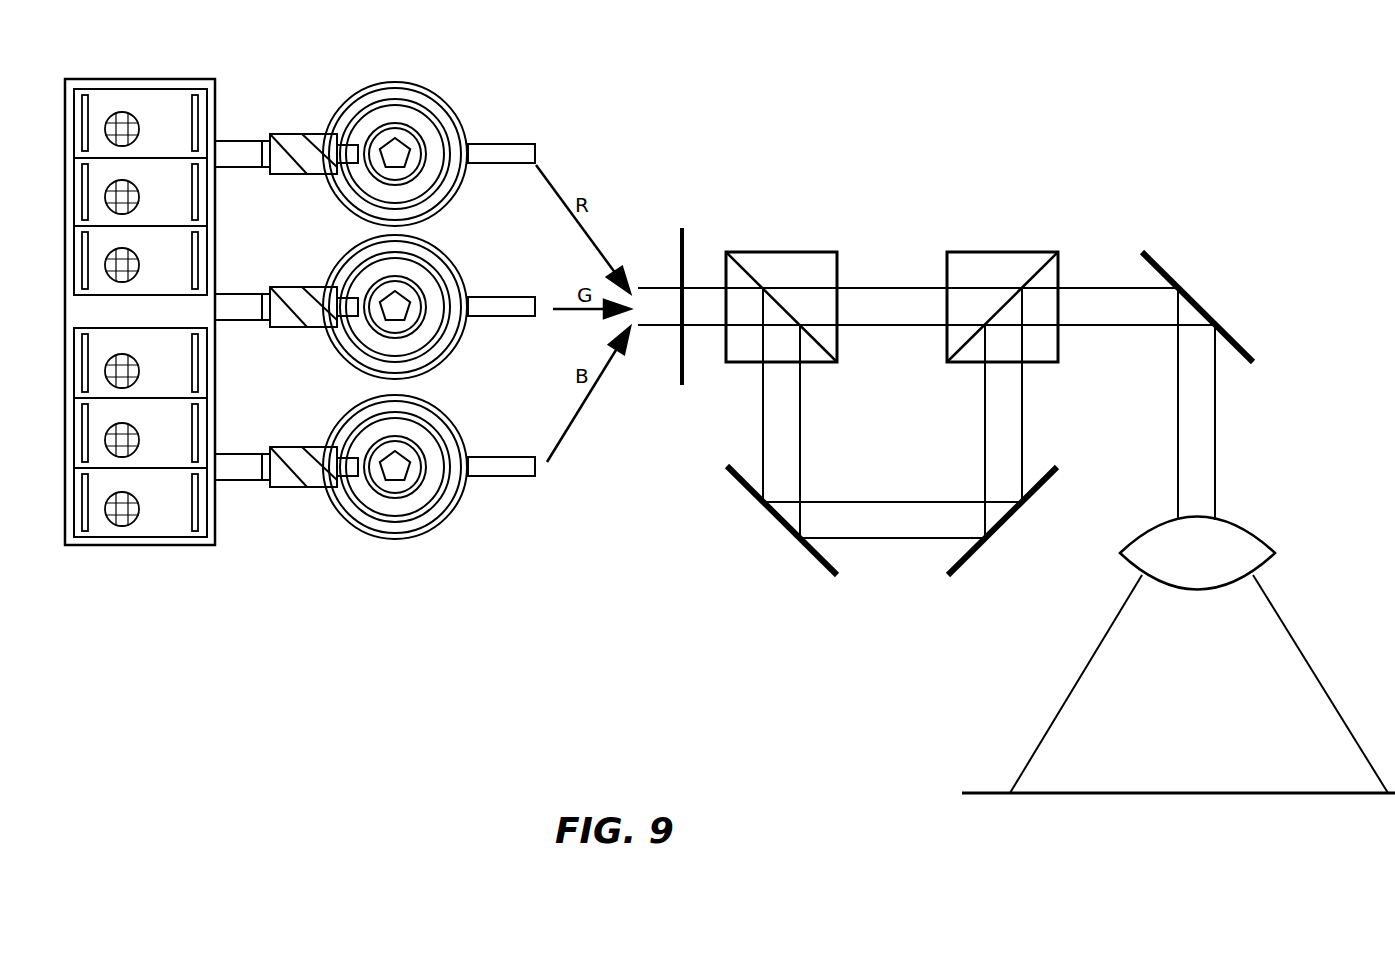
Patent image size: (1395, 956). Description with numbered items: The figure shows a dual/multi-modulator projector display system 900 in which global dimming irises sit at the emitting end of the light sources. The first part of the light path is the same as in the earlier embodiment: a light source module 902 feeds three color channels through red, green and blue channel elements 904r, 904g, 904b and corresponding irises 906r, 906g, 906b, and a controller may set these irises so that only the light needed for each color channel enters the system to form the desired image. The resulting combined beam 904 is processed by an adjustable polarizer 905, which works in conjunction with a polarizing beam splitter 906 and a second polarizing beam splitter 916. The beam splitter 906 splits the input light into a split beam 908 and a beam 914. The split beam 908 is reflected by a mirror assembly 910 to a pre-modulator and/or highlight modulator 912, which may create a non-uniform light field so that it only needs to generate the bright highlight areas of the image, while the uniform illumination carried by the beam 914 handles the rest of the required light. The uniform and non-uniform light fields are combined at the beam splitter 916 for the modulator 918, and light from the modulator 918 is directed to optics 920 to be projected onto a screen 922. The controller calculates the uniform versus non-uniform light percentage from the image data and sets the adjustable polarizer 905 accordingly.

The multi-modulator projector display system 900 is at (1116, 143).
The light source module 902 is at (215, 72).
The red channel light path element 904r is at (281, 133).
The green channel light path element 904g is at (281, 286).
The blue channel light path element 904b is at (281, 446).
The red channel iris 906r is at (452, 103).
The green channel iris 906g is at (452, 256).
The blue channel iris 906b is at (452, 416).
The combined beam 904 is at (652, 288).
The adjustable polarizer 905 is at (687, 250).
The polarizing beam splitter 906 is at (782, 252).
The split beam 908 is at (760, 400).
The mirror assembly 910 is at (733, 479).
The pre-modulator and/or highlight modulator 912 is at (1045, 487).
The beam 914 is at (863, 288).
The polarizing beam splitter 916 is at (990, 252).
The modulator 918 is at (1158, 262).
The optics 920 is at (1127, 563).
The screen 922 is at (992, 793).